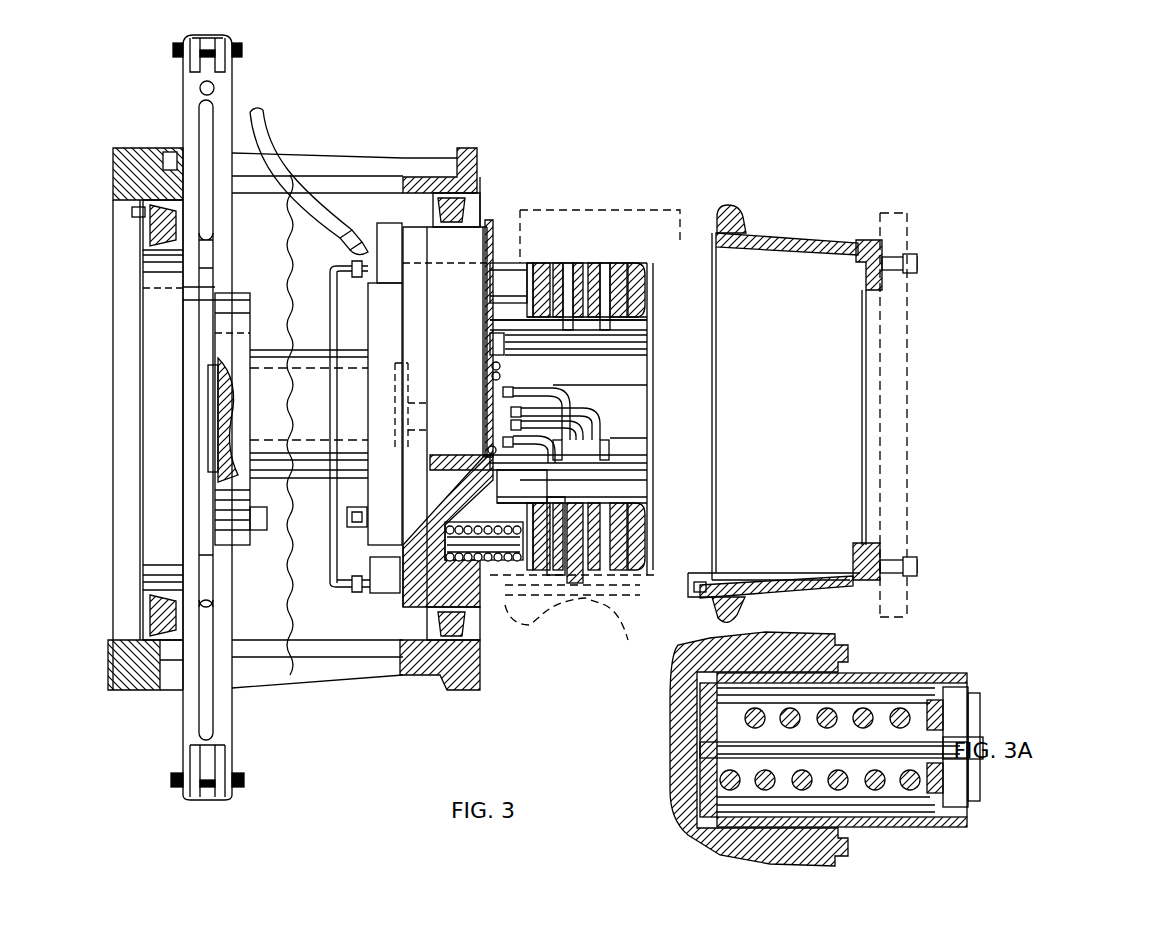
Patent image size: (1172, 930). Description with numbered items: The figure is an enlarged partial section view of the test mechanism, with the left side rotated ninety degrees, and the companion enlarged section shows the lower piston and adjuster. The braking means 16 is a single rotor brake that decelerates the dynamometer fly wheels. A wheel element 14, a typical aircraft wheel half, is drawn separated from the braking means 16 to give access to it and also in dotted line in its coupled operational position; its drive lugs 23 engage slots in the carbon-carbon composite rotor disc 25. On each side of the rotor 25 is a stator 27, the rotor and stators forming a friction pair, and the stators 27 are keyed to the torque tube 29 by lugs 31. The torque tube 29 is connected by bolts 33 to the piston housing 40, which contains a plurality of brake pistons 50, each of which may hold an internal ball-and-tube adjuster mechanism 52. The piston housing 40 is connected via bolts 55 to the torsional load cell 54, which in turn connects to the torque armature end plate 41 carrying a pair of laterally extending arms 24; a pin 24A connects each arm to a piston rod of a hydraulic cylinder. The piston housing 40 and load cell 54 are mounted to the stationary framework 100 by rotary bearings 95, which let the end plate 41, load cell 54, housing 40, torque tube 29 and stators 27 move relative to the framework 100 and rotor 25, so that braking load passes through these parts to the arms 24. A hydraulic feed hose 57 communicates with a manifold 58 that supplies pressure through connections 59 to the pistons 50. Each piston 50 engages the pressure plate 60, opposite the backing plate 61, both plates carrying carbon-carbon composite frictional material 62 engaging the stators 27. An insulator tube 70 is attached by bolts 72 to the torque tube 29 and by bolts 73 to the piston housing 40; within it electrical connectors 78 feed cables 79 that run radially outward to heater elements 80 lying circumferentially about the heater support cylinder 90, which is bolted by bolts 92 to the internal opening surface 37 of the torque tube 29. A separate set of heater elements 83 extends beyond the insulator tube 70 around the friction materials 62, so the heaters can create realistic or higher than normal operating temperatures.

In FIG. 3, the stationary framework 100 is at (113, 148).
In FIG. 3, the rotary bearings 95 is at (143, 227).
In FIG. 3, the laterally extending arms 24 is at (232, 107).
In FIG. 3, the pin 24A is at (200, 57).
In FIG. 3, the hydraulic feed hose 57 is at (270, 133).
In FIG. 3, the manifold 58 is at (387, 233).
In FIG. 3, the connections 59 is at (333, 292).
In FIG. 3, the torque armature end plate 41 is at (242, 292).
In FIG. 3, the torsional load cell 54 is at (258, 424).
In FIG. 3, the bolts 55 is at (347, 517).
In FIG. 3, the brake pistons 50 is at (497, 283).
In FIG. 3A, the brake pistons 50 is at (897, 673).
In FIG. 3, the piston housing 40 is at (440, 329).
In FIG. 3A, the piston housing 40 is at (672, 700).
In FIG. 3, the bolts 33 is at (492, 340).
In FIG. 3, the bolts 92 is at (497, 364).
In FIG. 3, the electrical connectors 78 is at (497, 399).
In FIG. 3, the bolts 73 is at (503, 441).
In FIG. 3, the electrical cables 79 is at (598, 408).
In FIG. 3, the braking means 16 is at (602, 193).
In FIG. 3, the pressure plate 60 is at (535, 263).
In FIG. 3, the carbon-carbon composite frictional material 62 is at (545, 262).
In FIG. 3, the heater elements 83 is at (557, 262).
In FIG. 3, the rotor disc 25 is at (587, 262).
In FIG. 3, the stators 27 is at (568, 262).
In FIG. 3, the backing plate 61 is at (654, 296).
In FIG. 3, the bolts 72 is at (654, 318).
In FIG. 3, the torque tube 29 is at (654, 345).
In FIG. 3, the heater support cylinder 90 is at (654, 362).
In FIG. 3, the insulator tube 70 is at (627, 462).
In FIG. 3, the heater elements 80 is at (642, 482).
In FIG. 3, the internal opening surface 37 is at (545, 500).
In FIG. 3, the lugs 31 is at (627, 502).
In FIG. 3, the ball-and-tube adjuster mechanism 52 is at (490, 560).
In FIG. 3A, the ball-and-tube adjuster mechanism 52 is at (980, 765).
In FIG. 3, the wheel element 14 is at (582, 605).
In FIG. 3, the drive lugs 23 is at (780, 574).